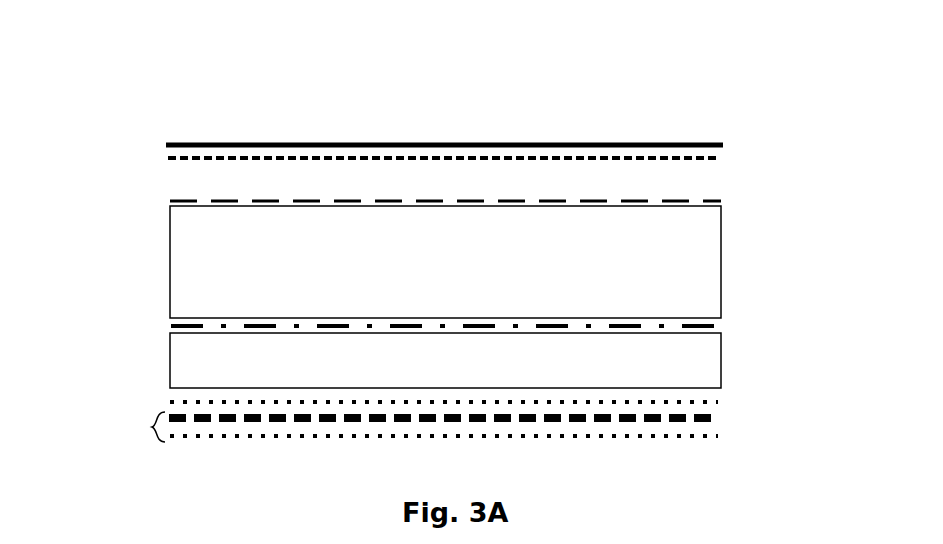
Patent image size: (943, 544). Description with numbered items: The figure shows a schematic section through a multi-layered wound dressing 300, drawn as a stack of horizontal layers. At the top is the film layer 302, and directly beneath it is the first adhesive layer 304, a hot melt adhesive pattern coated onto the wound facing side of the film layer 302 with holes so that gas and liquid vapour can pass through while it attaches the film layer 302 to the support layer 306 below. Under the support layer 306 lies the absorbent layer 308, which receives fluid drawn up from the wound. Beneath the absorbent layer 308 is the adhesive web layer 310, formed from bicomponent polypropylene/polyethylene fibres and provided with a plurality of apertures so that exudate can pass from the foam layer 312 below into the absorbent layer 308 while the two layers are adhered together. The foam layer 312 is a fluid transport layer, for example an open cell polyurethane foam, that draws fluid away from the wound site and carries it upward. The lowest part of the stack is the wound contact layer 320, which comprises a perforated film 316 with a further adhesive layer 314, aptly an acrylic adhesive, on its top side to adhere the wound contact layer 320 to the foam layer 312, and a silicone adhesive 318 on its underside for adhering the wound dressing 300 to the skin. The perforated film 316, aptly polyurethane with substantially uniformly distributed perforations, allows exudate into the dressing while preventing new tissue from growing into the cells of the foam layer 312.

The wound dressing 300 is at (243, 82).
The film layer 302 is at (695, 143).
The first adhesive layer 304 is at (168, 159).
The support layer 306 is at (718, 202).
The absorbent layer 308 is at (703, 279).
The adhesive web layer 310 is at (170, 326).
The foam layer 312 is at (700, 366).
The further adhesive layer 314 is at (170, 402).
The perforated film 316 is at (719, 418).
The silicone adhesive 318 is at (715, 437).
The wound contact layer 320 is at (152, 427).